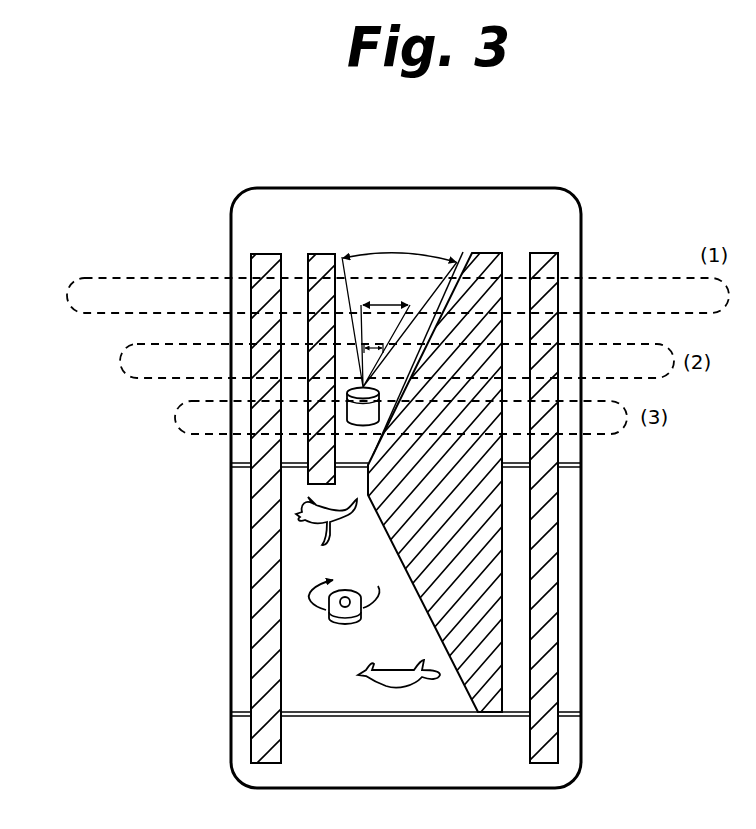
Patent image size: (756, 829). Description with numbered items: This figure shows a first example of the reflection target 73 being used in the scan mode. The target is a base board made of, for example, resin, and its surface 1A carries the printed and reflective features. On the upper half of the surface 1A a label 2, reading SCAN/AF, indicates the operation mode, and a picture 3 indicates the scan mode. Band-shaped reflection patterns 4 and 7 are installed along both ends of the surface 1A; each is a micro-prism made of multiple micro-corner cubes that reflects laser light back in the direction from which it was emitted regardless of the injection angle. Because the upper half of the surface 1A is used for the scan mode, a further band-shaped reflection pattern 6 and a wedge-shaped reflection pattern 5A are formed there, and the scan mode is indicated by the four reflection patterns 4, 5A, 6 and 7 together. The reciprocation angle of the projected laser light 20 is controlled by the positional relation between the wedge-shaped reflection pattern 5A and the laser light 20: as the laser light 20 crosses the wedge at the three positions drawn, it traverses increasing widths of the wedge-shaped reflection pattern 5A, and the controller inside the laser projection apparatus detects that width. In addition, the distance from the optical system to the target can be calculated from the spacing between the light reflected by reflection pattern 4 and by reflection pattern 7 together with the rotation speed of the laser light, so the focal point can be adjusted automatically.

The reflection target 73 is at (416, 182).
The surface 1A is at (512, 202).
The label 2 is at (338, 203).
The picture 3 is at (353, 418).
The band-shaped reflection pattern 4 is at (552, 263).
The wedge-shaped reflection pattern 5A is at (499, 249).
The band-shaped reflection pattern 6 is at (312, 253).
The band-shaped reflection pattern 7 is at (258, 259).
The laser light 20 is at (177, 410).